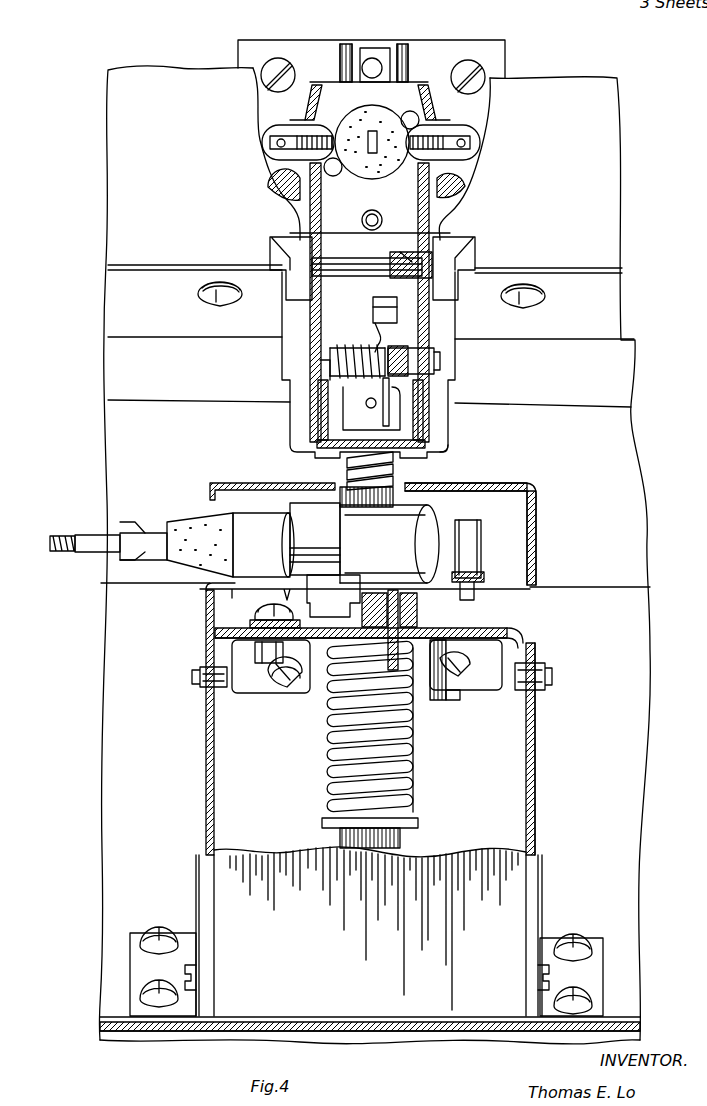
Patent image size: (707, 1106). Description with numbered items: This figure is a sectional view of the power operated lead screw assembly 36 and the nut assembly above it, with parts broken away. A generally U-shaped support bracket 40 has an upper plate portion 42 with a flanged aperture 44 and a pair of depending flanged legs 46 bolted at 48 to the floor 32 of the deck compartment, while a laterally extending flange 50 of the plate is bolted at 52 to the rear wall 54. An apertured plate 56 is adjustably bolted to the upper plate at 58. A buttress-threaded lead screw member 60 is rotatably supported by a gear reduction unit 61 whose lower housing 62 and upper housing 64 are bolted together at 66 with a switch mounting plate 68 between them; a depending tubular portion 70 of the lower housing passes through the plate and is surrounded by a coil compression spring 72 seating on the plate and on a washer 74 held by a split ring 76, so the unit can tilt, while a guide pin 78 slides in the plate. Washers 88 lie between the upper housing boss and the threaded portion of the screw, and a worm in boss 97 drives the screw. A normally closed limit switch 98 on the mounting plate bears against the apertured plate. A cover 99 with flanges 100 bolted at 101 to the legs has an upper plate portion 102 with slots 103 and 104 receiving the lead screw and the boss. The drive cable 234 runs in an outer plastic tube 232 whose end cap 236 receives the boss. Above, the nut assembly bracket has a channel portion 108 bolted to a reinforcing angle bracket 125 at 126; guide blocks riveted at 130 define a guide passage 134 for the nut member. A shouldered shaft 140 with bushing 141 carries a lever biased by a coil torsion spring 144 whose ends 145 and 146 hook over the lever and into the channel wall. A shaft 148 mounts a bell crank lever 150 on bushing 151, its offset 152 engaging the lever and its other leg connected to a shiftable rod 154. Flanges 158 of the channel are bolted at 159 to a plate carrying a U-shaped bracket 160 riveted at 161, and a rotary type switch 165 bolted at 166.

The floor 32 is at (635, 1025).
The power operated lead screw assembly 36 is at (537, 724).
The support bracket 40 is at (526, 748).
The upper plate portion 42 is at (515, 634).
The flanged aperture 44 is at (330, 660).
The flanged legs 46 is at (214, 796).
The bolts 48 is at (146, 995).
The laterally extending flange 50 is at (464, 696).
The bolts 52 is at (280, 682).
The rear wall 54 is at (640, 612).
The apertured plate 56 is at (494, 630).
The bolts 58 is at (278, 672).
The lead screw member 60 is at (350, 460).
The gear reduction unit 61 is at (430, 510).
The lower housing 62 is at (274, 595).
The upper housing 64 is at (430, 530).
The bolts 66 is at (330, 606).
The switch mounting plate 68 is at (480, 598).
The tubular portion 70 is at (335, 768).
The coil compression spring 72 is at (330, 752).
The washer 74 is at (325, 820).
The split ring 76 is at (338, 834).
The guide pin 78 is at (432, 686).
The washers 88 is at (393, 497).
The boss 97 is at (290, 532).
The limit switch 98 is at (481, 540).
The cover 99 is at (238, 852).
The flanges 100 is at (206, 808).
The bolts 101 is at (190, 680).
The upper plate portion 102 is at (492, 483).
The slot 103 is at (320, 484).
The slot 104 is at (205, 585).
The channel portion 108 is at (429, 208).
The reinforcing angle bracket 125 is at (585, 82).
The bolts 126 is at (202, 300).
The rivets 130 is at (315, 444).
The guide passage 134 is at (392, 416).
The shouldered shaft 140 is at (441, 362).
The bushing 141 is at (392, 350).
The coil torsion spring 144 is at (344, 348).
The spring end 145 is at (369, 408).
The spring end 146 is at (318, 358).
The shaft 148 is at (330, 260).
The bell crank lever 150 is at (394, 252).
The bushing 151 is at (462, 248).
The offset 152 is at (398, 310).
The shiftable rod 154 is at (285, 316).
The flanges 158 is at (450, 452).
The bolts 159 is at (281, 62).
The U-shaped bracket 160 is at (285, 386).
The rivets 161 is at (380, 215).
The rotary type switch 165 is at (372, 125).
The bolts 166 is at (420, 120).
The outer plastic tube 232 is at (104, 534).
The cables 234 is at (58, 534).
The end cap 236 is at (190, 514).